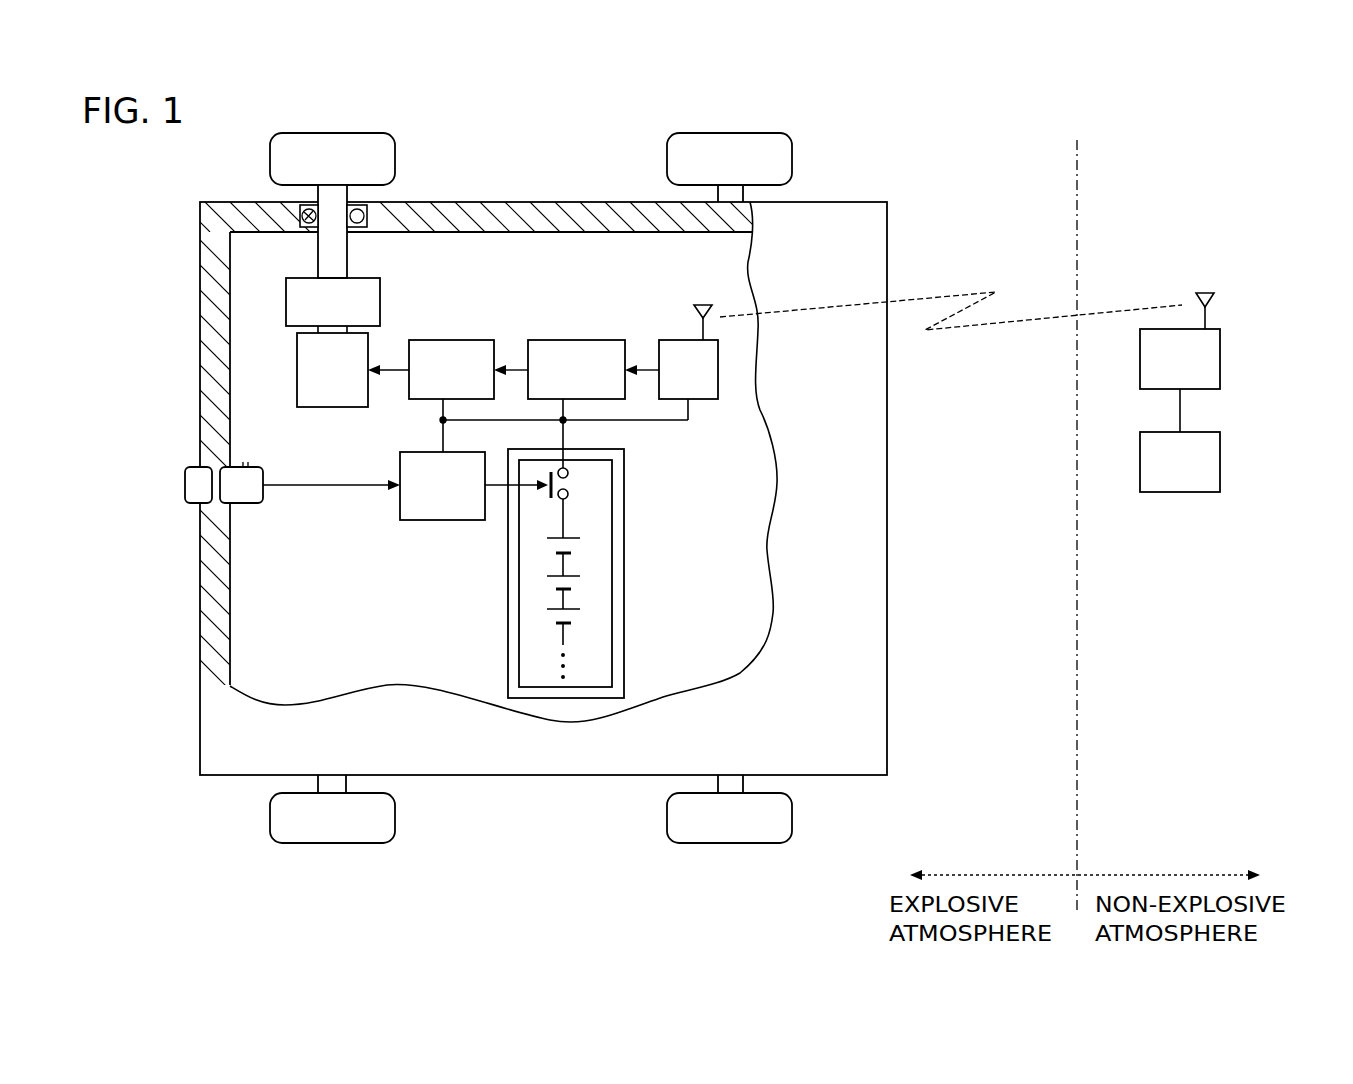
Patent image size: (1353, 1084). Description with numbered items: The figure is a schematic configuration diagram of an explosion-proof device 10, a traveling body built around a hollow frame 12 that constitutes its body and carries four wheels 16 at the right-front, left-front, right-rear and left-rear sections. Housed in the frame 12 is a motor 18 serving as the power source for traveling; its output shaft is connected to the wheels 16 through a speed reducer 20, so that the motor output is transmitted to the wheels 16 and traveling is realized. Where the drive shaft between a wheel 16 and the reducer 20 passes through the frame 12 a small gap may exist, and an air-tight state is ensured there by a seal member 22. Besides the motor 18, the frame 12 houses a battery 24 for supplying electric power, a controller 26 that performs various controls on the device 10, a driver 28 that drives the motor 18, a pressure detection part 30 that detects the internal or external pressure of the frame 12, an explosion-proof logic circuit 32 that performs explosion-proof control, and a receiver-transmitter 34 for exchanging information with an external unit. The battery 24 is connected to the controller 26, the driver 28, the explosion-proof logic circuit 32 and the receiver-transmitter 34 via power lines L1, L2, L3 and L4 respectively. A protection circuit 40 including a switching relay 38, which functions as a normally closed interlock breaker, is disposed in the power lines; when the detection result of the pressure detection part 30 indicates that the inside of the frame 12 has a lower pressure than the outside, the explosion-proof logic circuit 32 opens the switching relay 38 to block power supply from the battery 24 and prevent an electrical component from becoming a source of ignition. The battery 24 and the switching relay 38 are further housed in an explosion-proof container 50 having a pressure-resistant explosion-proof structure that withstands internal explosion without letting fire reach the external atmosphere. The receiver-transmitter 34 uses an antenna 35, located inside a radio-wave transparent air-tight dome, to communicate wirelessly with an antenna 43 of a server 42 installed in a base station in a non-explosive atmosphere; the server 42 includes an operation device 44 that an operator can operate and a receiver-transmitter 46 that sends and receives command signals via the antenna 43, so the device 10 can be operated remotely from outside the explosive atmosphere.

The explosion-proof device 10 is at (925, 155).
The frame 12 is at (843, 201).
The wheels 16 is at (347, 131).
The motor 18 is at (335, 410).
The speed reducer 20 is at (380, 300).
The seal member 22 is at (372, 217).
The battery 24 is at (639, 471).
The controller 26 is at (580, 339).
The driver 28 is at (466, 339).
The pressure detection part 30 is at (255, 457).
The explosion-proof logic circuit 32 is at (374, 507).
The receiver-transmitter 34 is at (718, 352).
The antenna 35 is at (702, 300).
The switching relay 38 is at (546, 491).
The protection circuit 40 is at (583, 489).
The server 42 is at (1255, 292).
The antenna 43 is at (1209, 291).
The operation device 44 is at (1220, 462).
The receiver-transmitter 46 is at (1220, 358).
The explosion-proof container 50 is at (626, 560).
The power line L1 is at (568, 410).
The power line L2 is at (440, 407).
The power line L3 is at (450, 422).
The power line L4 is at (690, 409).